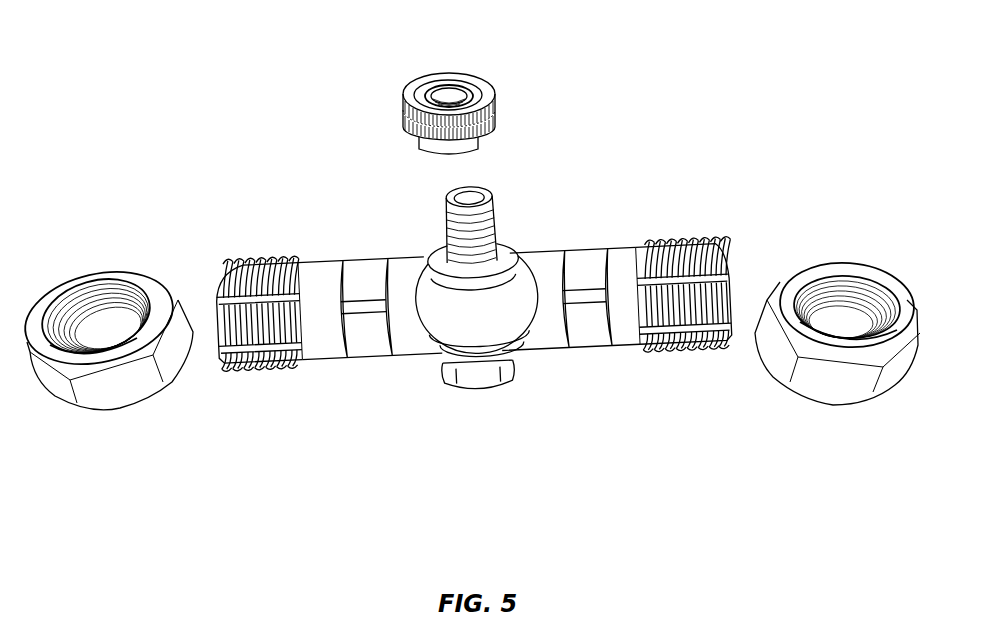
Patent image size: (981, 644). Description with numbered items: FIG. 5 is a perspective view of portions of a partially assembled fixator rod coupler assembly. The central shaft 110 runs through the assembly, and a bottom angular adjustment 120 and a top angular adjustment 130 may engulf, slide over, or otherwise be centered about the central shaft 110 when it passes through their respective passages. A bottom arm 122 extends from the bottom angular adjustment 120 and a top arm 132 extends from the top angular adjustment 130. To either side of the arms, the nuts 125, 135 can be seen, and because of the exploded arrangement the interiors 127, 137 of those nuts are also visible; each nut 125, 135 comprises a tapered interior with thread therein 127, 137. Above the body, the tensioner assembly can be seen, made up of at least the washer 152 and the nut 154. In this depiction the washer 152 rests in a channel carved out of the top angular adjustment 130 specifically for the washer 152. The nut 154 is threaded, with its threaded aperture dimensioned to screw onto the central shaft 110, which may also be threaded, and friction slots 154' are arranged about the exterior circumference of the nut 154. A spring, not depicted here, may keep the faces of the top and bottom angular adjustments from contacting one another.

The central shaft 110 is at (487, 212).
The bottom angular adjustment 120 is at (474, 363).
The bottom arm 122 is at (322, 338).
The nut 125 is at (127, 390).
The tapered interior with thread 127 is at (93, 292).
The top angular adjustment 130 is at (515, 290).
The top arm 132 is at (622, 325).
The nut 135 is at (830, 383).
The tapered interior with thread 137 is at (829, 284).
The washer 152 is at (440, 253).
The nut 154 is at (403, 90).
The friction slots 154' is at (492, 84).